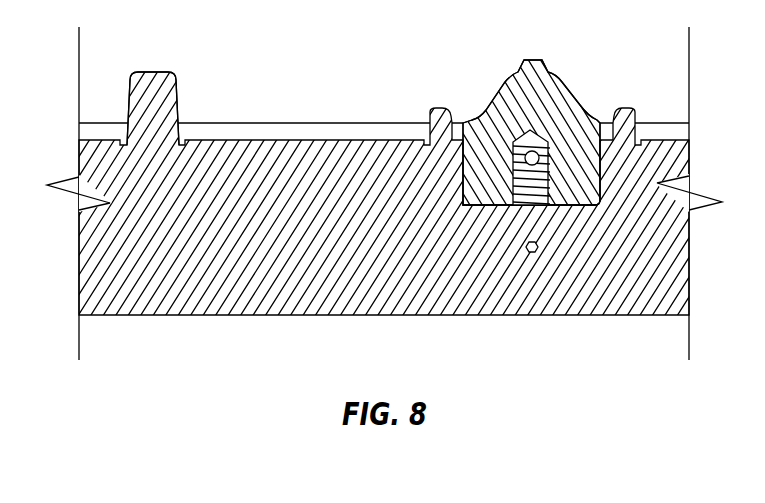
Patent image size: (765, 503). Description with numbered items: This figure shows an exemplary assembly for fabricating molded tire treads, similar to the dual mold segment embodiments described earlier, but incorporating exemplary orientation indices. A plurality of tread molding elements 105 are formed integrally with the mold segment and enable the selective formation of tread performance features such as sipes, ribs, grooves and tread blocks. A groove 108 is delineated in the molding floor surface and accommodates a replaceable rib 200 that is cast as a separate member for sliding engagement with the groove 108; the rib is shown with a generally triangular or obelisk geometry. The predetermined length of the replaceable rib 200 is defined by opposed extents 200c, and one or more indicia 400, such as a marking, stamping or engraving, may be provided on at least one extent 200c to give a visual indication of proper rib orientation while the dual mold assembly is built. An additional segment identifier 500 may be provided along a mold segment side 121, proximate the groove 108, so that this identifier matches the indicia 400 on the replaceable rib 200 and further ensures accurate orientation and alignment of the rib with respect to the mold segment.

The tread molding element 105 is at (150, 72).
The groove 108 is at (592, 206).
The mold segment side 121 is at (254, 250).
The replaceable rib 200 is at (533, 60).
The extent of replaceable rib 200c is at (541, 108).
The indicia 400 is at (512, 156).
The additional segment identifier 500 is at (523, 249).